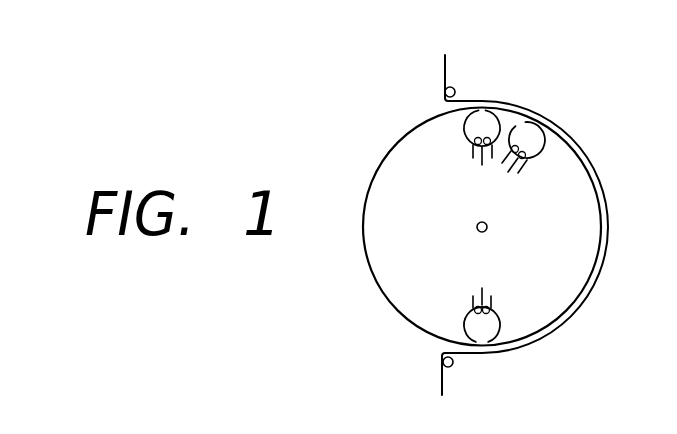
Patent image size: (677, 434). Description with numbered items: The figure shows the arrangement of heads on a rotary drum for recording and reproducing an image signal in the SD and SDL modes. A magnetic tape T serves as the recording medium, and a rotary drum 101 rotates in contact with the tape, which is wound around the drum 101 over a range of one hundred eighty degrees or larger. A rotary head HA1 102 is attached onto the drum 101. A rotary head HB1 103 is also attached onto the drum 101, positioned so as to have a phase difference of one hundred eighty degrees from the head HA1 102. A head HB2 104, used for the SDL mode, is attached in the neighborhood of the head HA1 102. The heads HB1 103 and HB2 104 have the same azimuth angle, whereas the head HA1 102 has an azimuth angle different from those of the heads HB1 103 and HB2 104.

The rotary drum 101 is at (402, 138).
The rotary head (HA1) 102 is at (491, 118).
The rotary head (HB1) 103 is at (508, 328).
The head (HB2) 104 is at (566, 159).
The magnetic tape T is at (445, 71).
The head HA1 is at (458, 137).
The head HB1 is at (457, 315).
The head HB2 is at (592, 135).